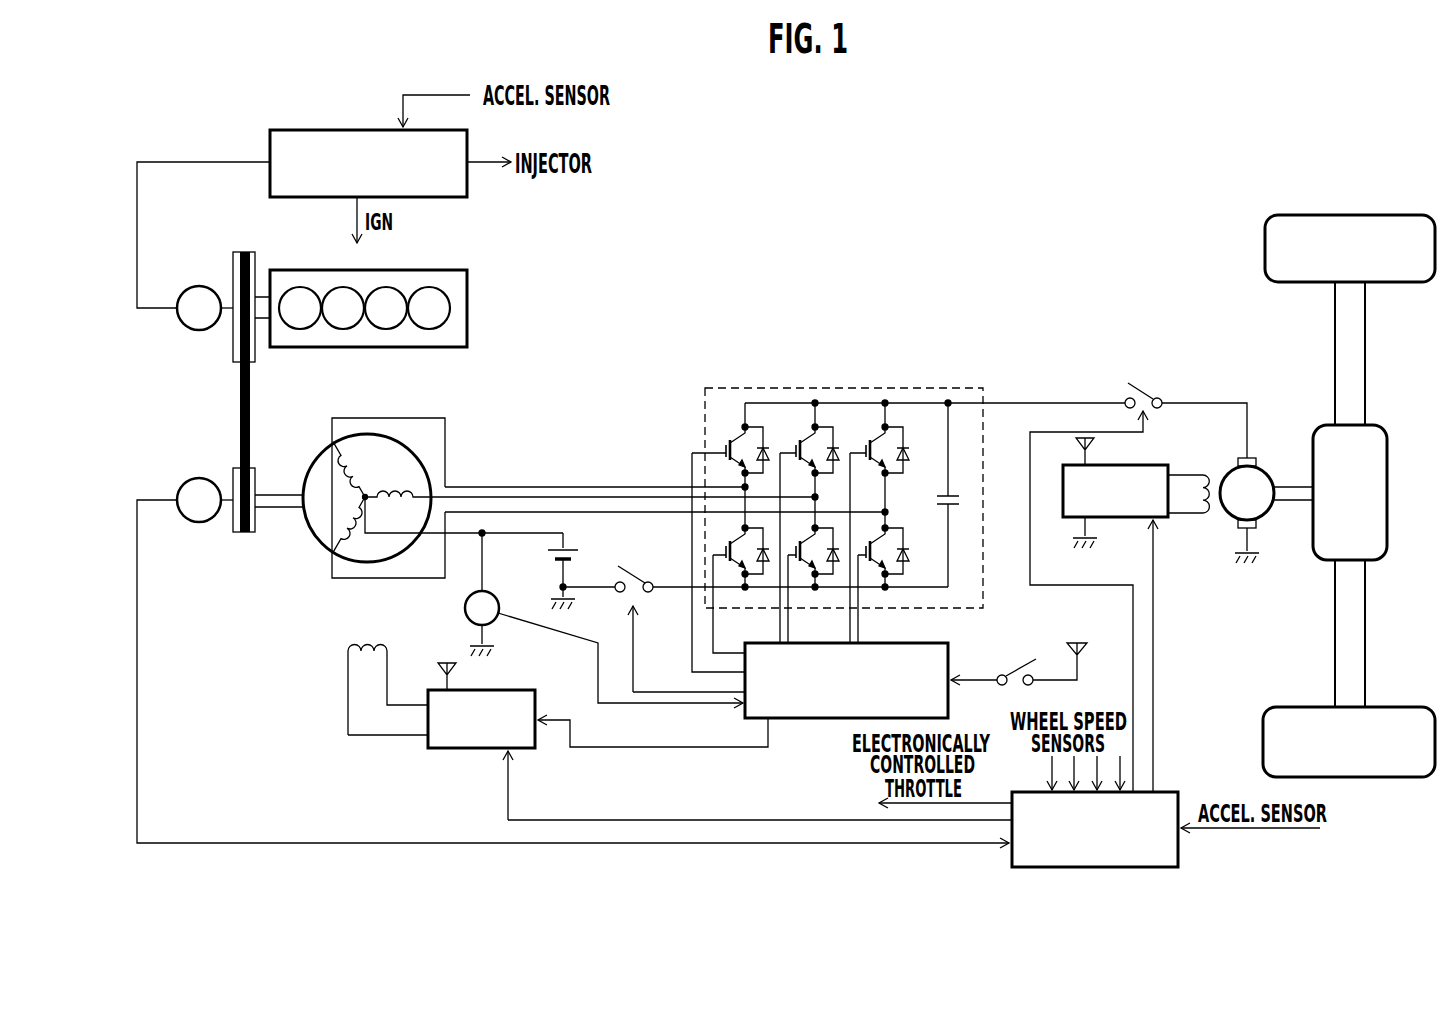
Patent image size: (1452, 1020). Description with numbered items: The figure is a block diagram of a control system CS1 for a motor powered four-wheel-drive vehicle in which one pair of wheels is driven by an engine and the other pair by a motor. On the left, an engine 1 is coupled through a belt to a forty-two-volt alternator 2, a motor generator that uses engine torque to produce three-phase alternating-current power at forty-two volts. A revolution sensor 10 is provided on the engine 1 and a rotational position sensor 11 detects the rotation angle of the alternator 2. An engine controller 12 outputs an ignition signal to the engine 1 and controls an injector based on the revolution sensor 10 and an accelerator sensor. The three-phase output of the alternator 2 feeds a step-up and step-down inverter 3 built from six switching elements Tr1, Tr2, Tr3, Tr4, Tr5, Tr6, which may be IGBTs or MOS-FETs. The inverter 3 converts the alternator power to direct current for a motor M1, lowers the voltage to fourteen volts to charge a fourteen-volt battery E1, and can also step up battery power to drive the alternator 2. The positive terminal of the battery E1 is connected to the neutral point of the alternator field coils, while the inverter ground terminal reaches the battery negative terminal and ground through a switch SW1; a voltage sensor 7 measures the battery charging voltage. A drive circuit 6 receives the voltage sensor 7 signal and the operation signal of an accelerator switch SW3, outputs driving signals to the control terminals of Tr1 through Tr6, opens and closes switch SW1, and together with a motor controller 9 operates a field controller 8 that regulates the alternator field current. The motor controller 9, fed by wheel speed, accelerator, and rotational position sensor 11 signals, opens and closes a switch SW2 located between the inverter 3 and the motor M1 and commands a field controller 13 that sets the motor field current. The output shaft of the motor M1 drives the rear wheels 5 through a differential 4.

The engine 1 is at (467, 308).
The 42-V alternator 2 is at (320, 458).
The step-up and step-down inverter 3 is at (892, 496).
The differential 4 is at (1387, 472).
The rear wheels 5 is at (1262, 252).
The drive circuit 6 is at (950, 662).
The voltage sensor 7 is at (465, 607).
The field controller 8 is at (468, 750).
The motor controller 9 is at (1177, 792).
The revolution sensor 10 is at (203, 286).
The rotational position sensor 11 is at (199, 522).
The engine controller 12 is at (344, 128).
The field controller 13 is at (1165, 520).
The switching element Tr1 is at (737, 432).
The switching element Tr2 is at (806, 432).
The switching element Tr3 is at (878, 432).
The switching element Tr4 is at (737, 530).
The switching element Tr5 is at (803, 568).
The switching element Tr6 is at (905, 570).
The switch SW1 is at (641, 568).
The switch SW2 is at (1153, 384).
The accelerator switch SW3 is at (1042, 659).
The 14-V battery E1 is at (570, 558).
The motor M1 is at (1262, 461).
The control system CS1 is at (833, 242).